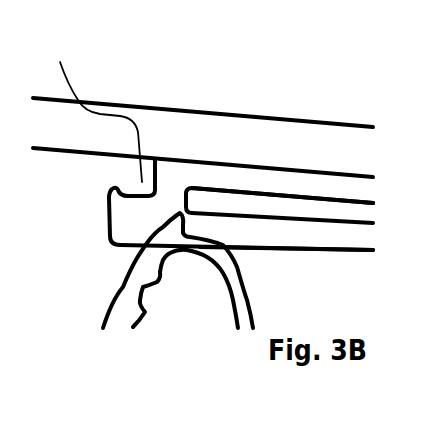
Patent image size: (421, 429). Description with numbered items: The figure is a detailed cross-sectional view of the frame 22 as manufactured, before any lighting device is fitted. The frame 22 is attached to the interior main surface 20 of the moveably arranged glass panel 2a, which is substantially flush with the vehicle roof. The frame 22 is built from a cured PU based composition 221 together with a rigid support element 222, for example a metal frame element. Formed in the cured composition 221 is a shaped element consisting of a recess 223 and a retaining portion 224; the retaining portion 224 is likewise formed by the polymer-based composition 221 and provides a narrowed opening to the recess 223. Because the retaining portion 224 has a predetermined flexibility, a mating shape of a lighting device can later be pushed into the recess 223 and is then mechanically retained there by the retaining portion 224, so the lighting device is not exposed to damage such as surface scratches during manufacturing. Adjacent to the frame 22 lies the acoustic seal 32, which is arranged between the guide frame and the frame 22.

The glass panel 2a is at (196, 146).
The interior main surface 20 is at (53, 162).
The frame 22 is at (298, 252).
The acoustic seal 32 is at (127, 307).
The cured PU based composition 221 is at (217, 178).
The rigid support element 222 is at (283, 207).
The recess 223 is at (94, 109).
The retaining portion 224 is at (102, 202).